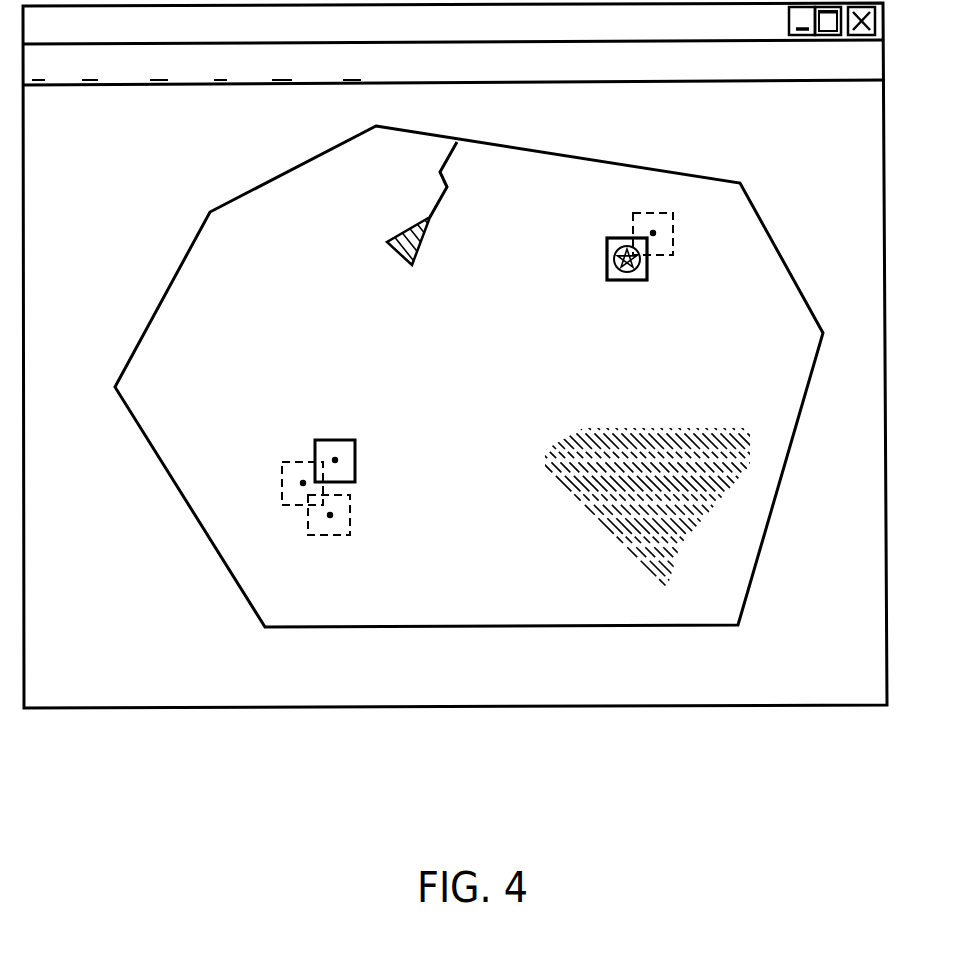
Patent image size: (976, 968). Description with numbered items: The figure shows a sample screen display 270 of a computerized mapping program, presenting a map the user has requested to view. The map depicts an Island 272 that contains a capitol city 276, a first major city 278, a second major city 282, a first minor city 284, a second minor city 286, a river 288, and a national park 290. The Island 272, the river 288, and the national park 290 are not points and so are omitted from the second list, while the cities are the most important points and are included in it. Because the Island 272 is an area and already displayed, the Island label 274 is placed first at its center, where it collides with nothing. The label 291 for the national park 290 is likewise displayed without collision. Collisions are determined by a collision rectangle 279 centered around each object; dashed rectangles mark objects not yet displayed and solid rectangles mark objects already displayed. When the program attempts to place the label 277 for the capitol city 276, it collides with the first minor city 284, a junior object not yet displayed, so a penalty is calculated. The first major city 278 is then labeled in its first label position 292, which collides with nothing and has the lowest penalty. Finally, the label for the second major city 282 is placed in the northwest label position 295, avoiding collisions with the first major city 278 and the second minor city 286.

The screen display 270 is at (326, 788).
The Island 272 is at (655, 630).
The Island label 274 is at (290, 381).
The capitol city 276 is at (607, 262).
The label for the capitol city 277 is at (712, 300).
The first major city 278 is at (335, 460).
The collision rectangle 279 is at (652, 213).
The second major city 282 is at (303, 483).
The first minor city 284 is at (653, 233).
The second minor city 286 is at (330, 515).
The river 288 is at (443, 181).
The national park 290 is at (686, 530).
The label for the national park 291 is at (632, 460).
The first label position 292 is at (382, 438).
The northwest label position 295 is at (238, 433).